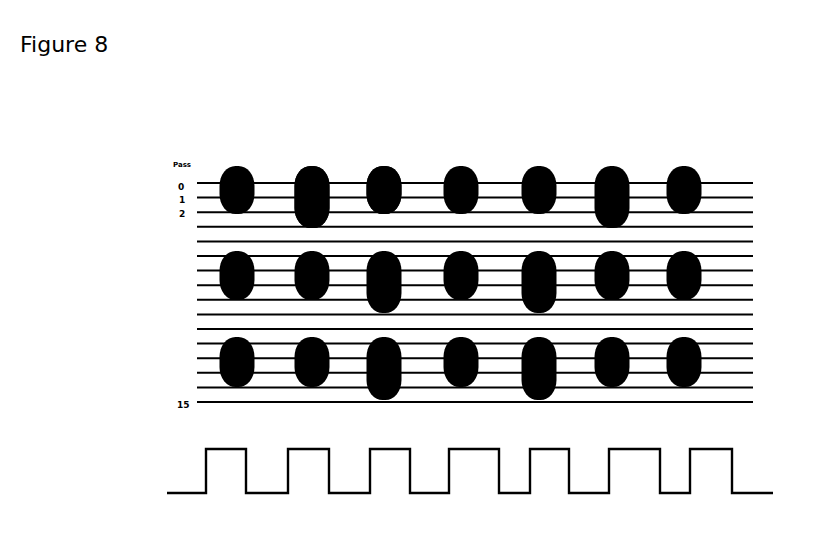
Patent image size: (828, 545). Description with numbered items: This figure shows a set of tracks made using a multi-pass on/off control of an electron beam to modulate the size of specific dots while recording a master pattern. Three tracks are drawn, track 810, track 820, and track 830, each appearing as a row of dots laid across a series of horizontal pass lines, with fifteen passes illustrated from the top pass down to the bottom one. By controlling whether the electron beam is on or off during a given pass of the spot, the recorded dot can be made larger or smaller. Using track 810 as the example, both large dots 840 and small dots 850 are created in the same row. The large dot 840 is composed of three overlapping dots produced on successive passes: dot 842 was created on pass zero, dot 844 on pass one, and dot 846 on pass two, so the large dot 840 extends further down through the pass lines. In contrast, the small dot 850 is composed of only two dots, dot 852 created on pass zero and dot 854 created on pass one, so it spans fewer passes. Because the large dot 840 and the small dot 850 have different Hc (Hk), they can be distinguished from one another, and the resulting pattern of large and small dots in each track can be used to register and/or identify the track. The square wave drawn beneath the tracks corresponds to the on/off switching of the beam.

The track 810 is at (405, 157).
The track 820 is at (184, 273).
The track 830 is at (184, 368).
The large dot 840 is at (221, 150).
The dot 842 is at (302, 168).
The dot 844 is at (296, 188).
The dot 846 is at (294, 193).
The small dot 850 is at (489, 149).
The dot 852 is at (400, 170).
The dot 854 is at (401, 200).